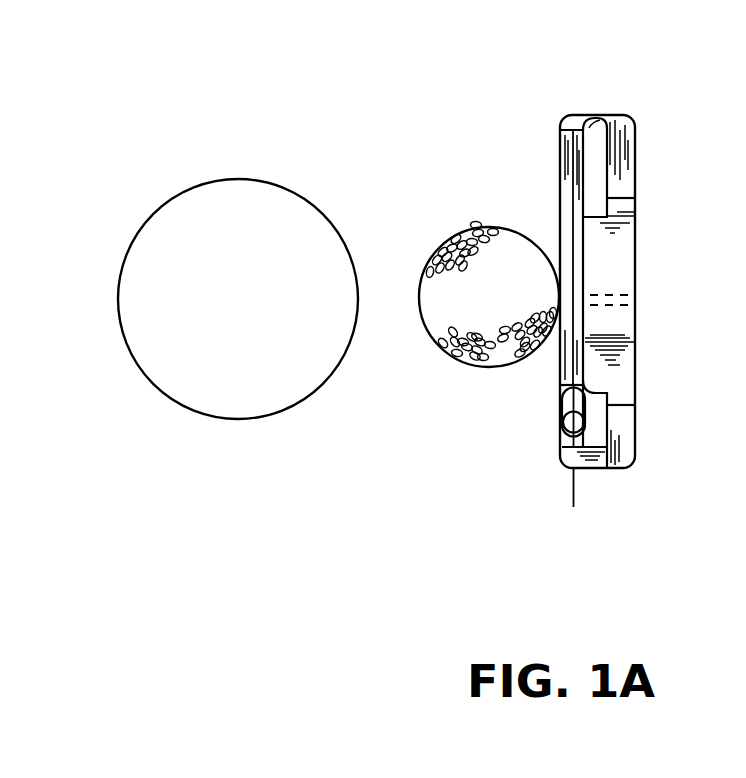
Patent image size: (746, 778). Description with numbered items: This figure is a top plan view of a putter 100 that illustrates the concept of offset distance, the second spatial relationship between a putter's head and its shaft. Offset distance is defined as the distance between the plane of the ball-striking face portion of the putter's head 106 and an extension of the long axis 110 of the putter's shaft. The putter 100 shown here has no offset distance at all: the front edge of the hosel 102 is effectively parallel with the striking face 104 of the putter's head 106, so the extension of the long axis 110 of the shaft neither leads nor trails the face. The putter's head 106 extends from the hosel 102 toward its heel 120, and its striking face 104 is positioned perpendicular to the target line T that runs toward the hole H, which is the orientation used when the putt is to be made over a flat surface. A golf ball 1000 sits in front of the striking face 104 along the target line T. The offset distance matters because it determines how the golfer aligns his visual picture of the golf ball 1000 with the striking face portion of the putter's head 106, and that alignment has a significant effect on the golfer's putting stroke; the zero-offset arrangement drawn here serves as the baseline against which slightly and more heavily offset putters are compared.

The hole H is at (240, 178).
The target line T is at (420, 302).
The golf ball 1000 is at (462, 232).
The putter 100 is at (637, 138).
The hosel 102 is at (563, 405).
The striking face 104 is at (560, 190).
The putter's head 106 is at (620, 118).
The long axis 110 is at (574, 507).
The heel 120 is at (635, 425).